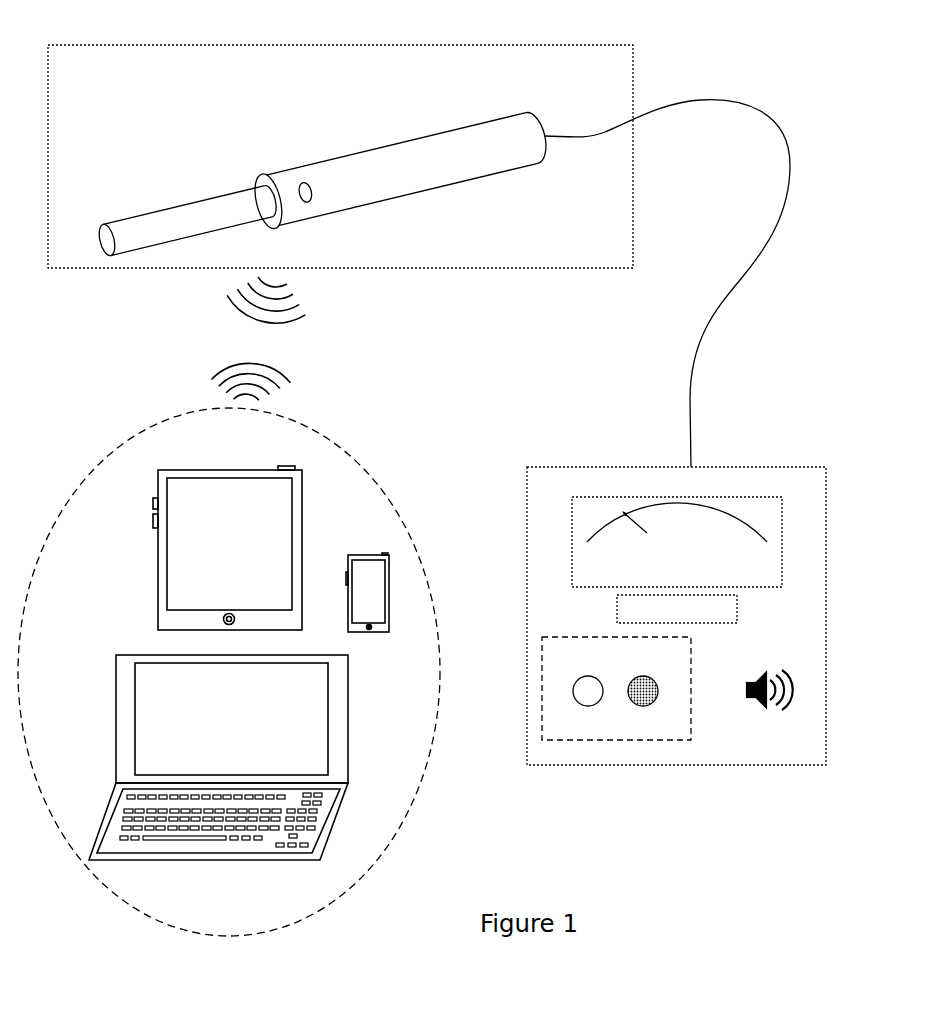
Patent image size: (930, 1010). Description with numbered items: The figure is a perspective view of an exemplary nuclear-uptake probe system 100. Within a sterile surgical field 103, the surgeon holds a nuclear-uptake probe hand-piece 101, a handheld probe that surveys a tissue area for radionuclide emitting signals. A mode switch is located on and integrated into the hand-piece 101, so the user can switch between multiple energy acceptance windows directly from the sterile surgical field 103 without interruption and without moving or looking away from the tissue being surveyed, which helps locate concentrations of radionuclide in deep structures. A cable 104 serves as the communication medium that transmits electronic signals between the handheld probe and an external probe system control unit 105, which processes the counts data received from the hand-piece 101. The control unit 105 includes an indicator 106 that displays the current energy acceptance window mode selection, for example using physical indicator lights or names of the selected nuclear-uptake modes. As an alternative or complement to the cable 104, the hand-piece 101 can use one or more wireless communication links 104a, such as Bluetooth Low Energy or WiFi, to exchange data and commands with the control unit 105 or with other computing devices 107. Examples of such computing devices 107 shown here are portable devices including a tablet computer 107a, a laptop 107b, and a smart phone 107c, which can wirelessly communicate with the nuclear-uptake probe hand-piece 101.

The nuclear-uptake probe system 100 is at (733, 74).
The nuclear-uptake probe hand-piece 101 is at (343, 188).
The sterile surgical field 103 is at (468, 45).
The cable 104 is at (762, 264).
The wireless communication links 104a is at (295, 320).
The external probe system control unit 105 is at (647, 616).
The indicator 106 is at (542, 652).
The computing devices 107 is at (367, 480).
The tablet computer 107a is at (168, 568).
The laptop 107b is at (115, 703).
The smart phone 107c is at (362, 633).